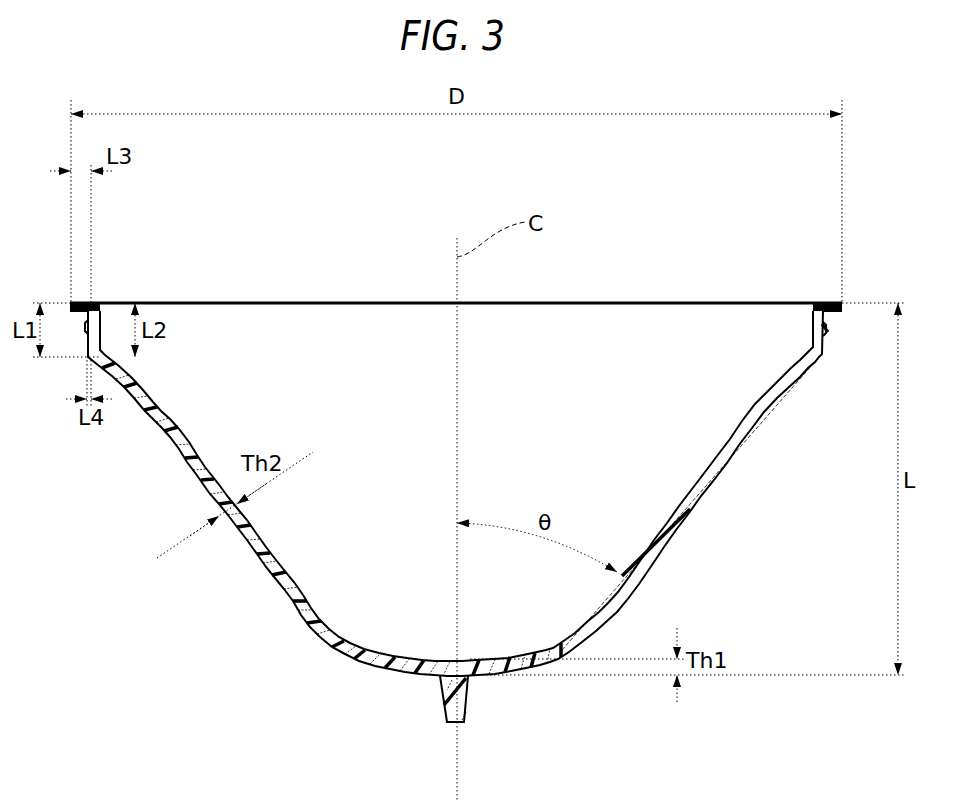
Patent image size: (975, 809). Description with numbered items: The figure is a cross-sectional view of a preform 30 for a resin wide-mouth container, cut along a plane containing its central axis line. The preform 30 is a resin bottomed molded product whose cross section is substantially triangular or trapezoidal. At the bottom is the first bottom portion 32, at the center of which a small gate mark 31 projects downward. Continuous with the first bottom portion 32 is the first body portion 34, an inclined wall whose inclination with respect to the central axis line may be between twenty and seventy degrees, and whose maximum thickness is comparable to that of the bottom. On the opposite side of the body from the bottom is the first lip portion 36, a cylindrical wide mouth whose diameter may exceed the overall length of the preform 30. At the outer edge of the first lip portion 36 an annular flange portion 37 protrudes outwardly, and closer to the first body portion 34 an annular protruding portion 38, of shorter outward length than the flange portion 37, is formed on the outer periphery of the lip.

The preform 30 is at (688, 266).
The gate mark 31 is at (470, 700).
The first bottom portion 32 is at (392, 666).
The first body portion 34 is at (247, 545).
The first lip portion 36 is at (122, 309).
The flange portion 37 is at (840, 310).
The protruding portion 38 is at (829, 330).